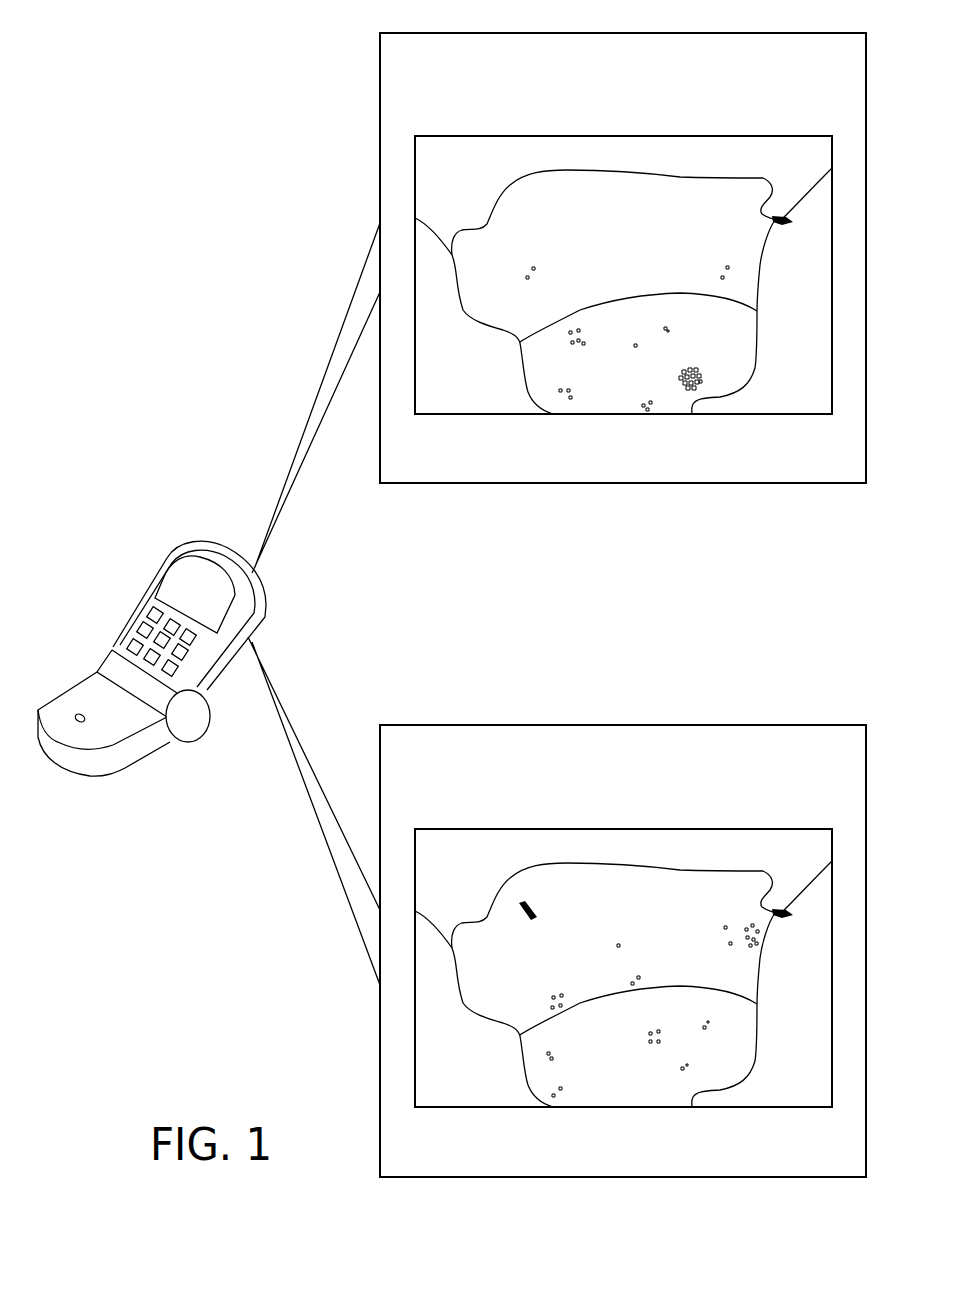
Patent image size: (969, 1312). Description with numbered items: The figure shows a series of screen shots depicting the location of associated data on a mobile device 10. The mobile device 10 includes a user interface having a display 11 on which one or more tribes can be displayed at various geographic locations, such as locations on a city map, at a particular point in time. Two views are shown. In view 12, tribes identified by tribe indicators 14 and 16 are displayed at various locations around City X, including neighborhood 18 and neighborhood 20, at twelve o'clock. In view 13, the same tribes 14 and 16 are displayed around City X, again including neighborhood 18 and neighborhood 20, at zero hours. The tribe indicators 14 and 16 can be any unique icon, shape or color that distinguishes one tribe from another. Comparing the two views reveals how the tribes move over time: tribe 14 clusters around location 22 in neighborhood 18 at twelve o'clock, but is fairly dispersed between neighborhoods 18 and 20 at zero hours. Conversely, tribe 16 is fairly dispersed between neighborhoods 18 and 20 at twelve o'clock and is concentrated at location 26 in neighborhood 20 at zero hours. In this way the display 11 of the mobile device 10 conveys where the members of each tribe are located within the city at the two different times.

The mobile device 10 is at (108, 650).
The display 11 is at (167, 590).
The view 12 is at (380, 137).
The view 13 is at (380, 771).
The tribe indicator 14 is at (535, 268).
The tribe indicator 16 is at (634, 345).
The neighborhood 18 is at (543, 397).
The neighborhood 20 is at (760, 277).
The location 22 is at (693, 363).
The location 26 is at (536, 917).